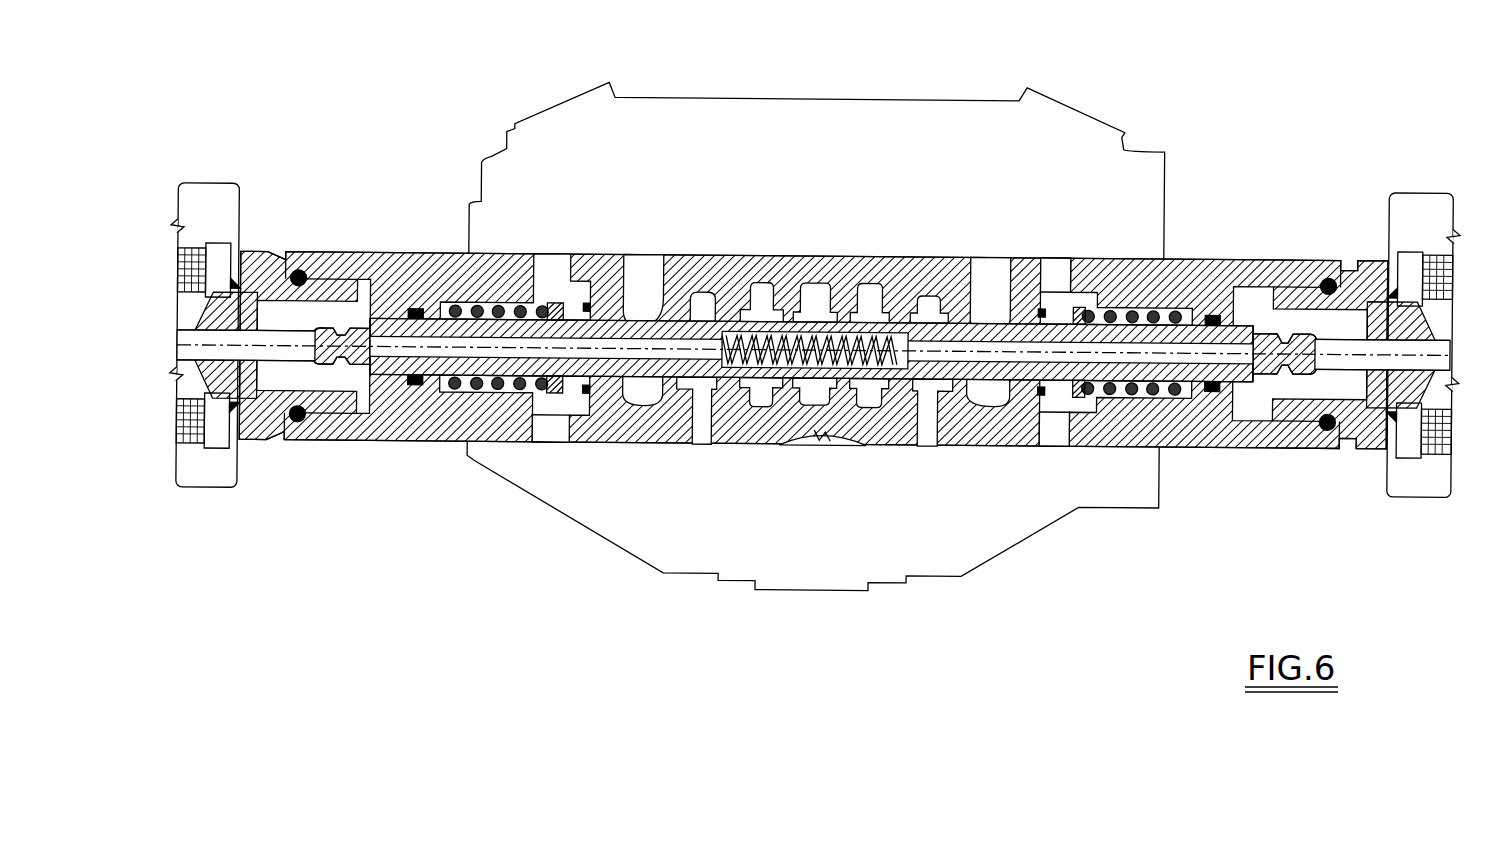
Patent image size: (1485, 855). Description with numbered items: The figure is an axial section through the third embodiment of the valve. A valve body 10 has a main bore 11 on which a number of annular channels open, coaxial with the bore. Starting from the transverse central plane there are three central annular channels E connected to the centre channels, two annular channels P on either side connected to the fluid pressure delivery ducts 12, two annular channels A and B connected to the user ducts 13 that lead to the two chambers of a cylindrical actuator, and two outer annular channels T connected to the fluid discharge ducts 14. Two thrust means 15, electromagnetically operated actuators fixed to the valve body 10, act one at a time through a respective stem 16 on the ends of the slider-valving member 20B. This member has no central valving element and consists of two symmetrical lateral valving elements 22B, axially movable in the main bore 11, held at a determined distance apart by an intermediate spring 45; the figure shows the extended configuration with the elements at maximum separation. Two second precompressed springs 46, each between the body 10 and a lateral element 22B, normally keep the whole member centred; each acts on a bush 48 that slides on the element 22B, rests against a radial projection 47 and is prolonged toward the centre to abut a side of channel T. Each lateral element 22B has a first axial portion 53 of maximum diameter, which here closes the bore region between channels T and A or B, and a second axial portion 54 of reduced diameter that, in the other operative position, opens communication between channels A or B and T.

The valve body 10 is at (546, 96).
The main bore 11 is at (770, 442).
The fluid pressure delivery ducts 12 is at (700, 453).
The user ducts 13 is at (655, 255).
The fluid discharge ducts 14 is at (545, 256).
The thrust means 15 is at (196, 252).
The stem 16 is at (278, 335).
The slider-valving member 20B is at (853, 448).
The lateral valving elements 22B is at (612, 256).
The intermediate spring 45 is at (790, 256).
The second precompressed springs 46 is at (455, 308).
The radial projection 47 is at (578, 447).
The bush 48 is at (537, 446).
The first axial portion 53 is at (993, 447).
The second axial portion 54 is at (1028, 258).
The annular channel A is at (661, 452).
The annular channel B is at (952, 447).
The annular channels P is at (703, 256).
The central annular channels E is at (762, 256).
The annular channels T is at (560, 450).